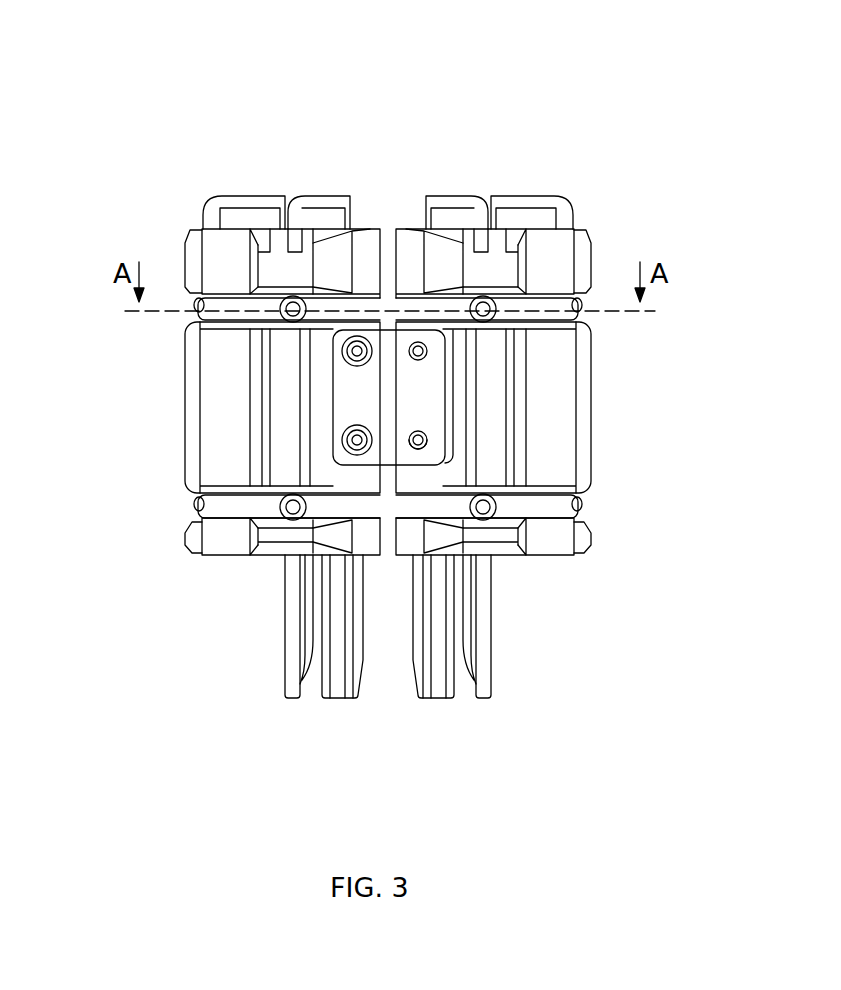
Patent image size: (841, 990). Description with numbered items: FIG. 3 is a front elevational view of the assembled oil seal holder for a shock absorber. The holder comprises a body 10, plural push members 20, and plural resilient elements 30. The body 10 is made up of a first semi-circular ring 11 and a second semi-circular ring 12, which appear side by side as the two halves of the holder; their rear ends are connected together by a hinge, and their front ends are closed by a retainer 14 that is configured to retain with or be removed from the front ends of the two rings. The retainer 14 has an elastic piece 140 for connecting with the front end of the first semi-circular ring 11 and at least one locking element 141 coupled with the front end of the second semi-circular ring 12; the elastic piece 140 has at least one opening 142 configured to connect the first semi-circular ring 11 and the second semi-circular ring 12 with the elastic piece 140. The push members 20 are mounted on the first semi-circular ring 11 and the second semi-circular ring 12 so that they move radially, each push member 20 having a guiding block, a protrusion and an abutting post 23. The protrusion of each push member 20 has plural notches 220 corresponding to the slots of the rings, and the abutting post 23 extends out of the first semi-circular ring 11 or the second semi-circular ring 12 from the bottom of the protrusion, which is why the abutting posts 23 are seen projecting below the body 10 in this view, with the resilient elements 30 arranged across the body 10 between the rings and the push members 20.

The body 10 is at (170, 155).
The push member 20 is at (242, 205).
The resilient element 30 is at (197, 315).
The notch 220 is at (200, 508).
The first semi-circular ring 11 is at (195, 407).
The second semi-circular ring 12 is at (582, 397).
The retainer 14 is at (332, 405).
The elastic piece 140 is at (359, 388).
The locking element 141 is at (436, 450).
The opening 142 is at (428, 442).
The abutting post 23 is at (286, 682).